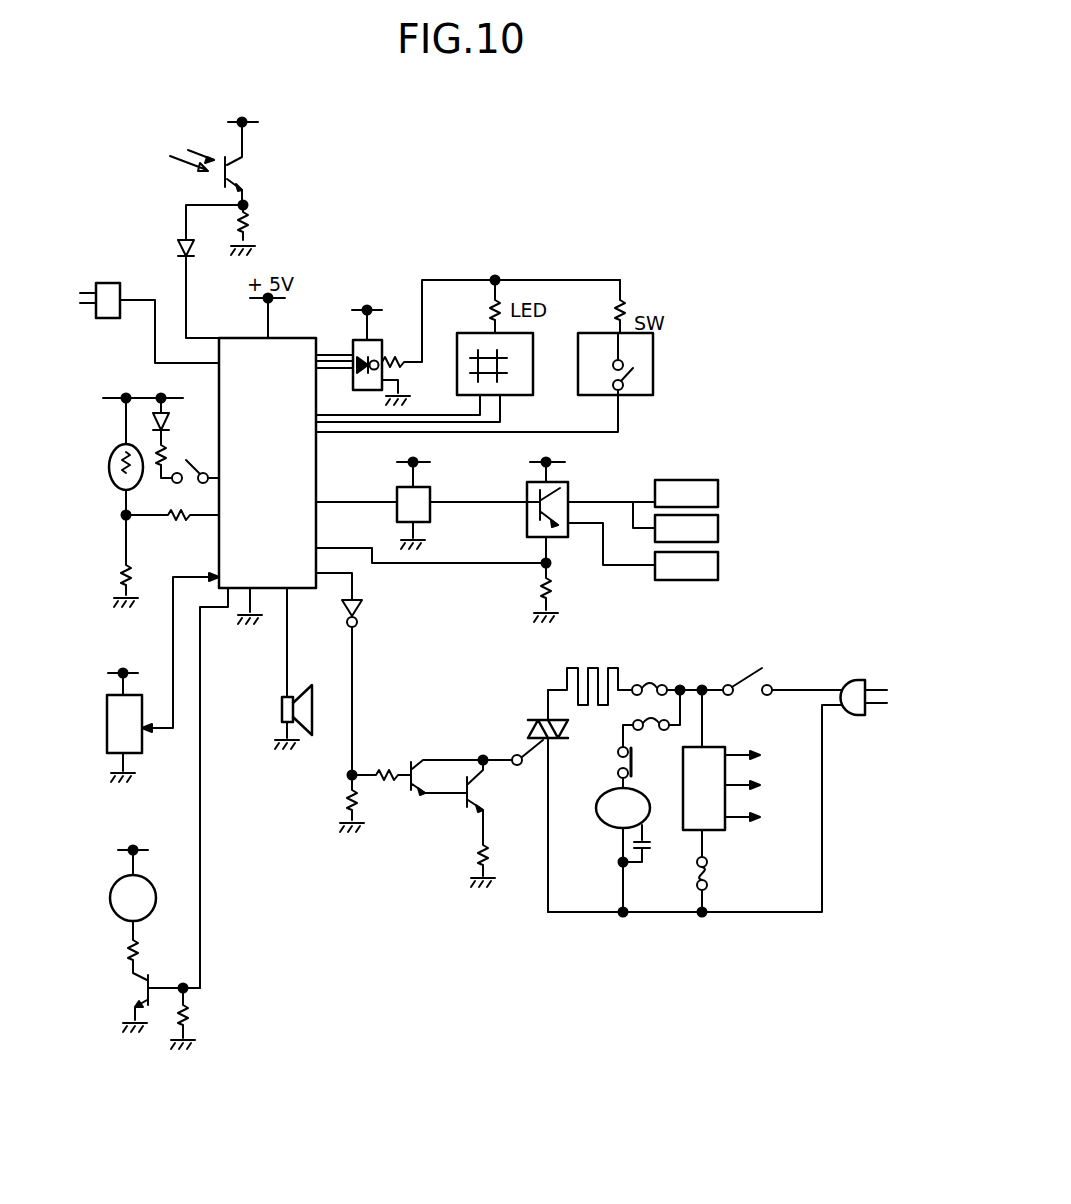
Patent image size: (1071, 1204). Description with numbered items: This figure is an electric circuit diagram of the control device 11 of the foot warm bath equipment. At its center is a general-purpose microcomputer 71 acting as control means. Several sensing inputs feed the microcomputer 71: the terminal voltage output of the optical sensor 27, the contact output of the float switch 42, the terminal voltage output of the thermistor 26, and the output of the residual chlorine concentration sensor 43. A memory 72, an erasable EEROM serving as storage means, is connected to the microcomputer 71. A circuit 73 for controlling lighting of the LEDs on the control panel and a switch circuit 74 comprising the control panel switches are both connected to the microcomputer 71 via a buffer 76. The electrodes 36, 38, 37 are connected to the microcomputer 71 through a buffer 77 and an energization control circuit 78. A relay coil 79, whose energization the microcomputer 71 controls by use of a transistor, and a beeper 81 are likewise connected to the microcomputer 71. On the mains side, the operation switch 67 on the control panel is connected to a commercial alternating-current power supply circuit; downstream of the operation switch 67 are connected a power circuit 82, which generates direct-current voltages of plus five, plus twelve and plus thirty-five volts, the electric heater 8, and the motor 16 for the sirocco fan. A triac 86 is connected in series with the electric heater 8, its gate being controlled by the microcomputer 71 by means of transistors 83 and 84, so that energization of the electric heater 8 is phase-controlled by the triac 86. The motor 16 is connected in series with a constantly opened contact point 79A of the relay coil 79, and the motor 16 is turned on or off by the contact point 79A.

The control device 11 is at (410, 240).
The optical sensor 27 is at (245, 172).
The residual chlorine concentration sensor 43 is at (107, 283).
The microcomputer 71 is at (302, 337).
The buffer 76 is at (387, 348).
The circuit for controlling lighting of the LEDs 73 is at (535, 361).
The switch circuit 74 is at (655, 359).
The thermistor 26 is at (109, 467).
The float switch 42 is at (183, 462).
The memory 72 is at (107, 718).
The beeper 81 is at (282, 710).
The buffer 77 is at (430, 491).
The energization control circuit 78 is at (568, 492).
The electrode 36 is at (720, 492).
The electrode 38 is at (720, 527).
The electrode 37 is at (720, 566).
The transistor 83 is at (423, 758).
The transistor 84 is at (462, 800).
The triac 86 is at (532, 730).
The electric heater 8 is at (598, 660).
The operation switch 67 is at (755, 668).
The power circuit 82 is at (722, 745).
The contact point 79A is at (617, 773).
The motor 16 is at (600, 816).
The relay coil 79 is at (110, 891).